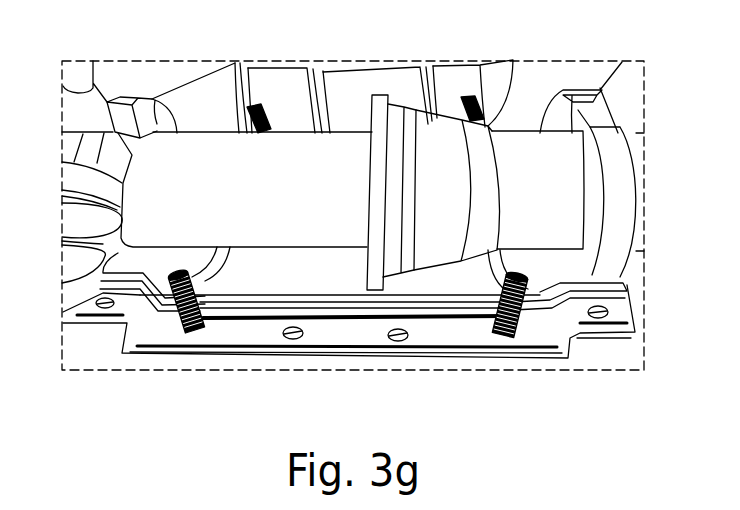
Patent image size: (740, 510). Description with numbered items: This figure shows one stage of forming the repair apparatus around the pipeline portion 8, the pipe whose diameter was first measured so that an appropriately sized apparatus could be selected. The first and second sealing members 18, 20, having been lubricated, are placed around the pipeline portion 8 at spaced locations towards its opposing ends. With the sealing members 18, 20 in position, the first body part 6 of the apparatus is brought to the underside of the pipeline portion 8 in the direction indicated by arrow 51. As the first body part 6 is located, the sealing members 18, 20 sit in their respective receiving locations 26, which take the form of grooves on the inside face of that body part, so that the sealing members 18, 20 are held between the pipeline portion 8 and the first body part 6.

The first body part 6 is at (462, 330).
The pipeline portion 8 is at (190, 163).
The first sealing member 18 is at (155, 100).
The second sealing member 20 is at (575, 102).
The sealing member receiving location 26 is at (138, 340).
The arrow 51 is at (277, 297).